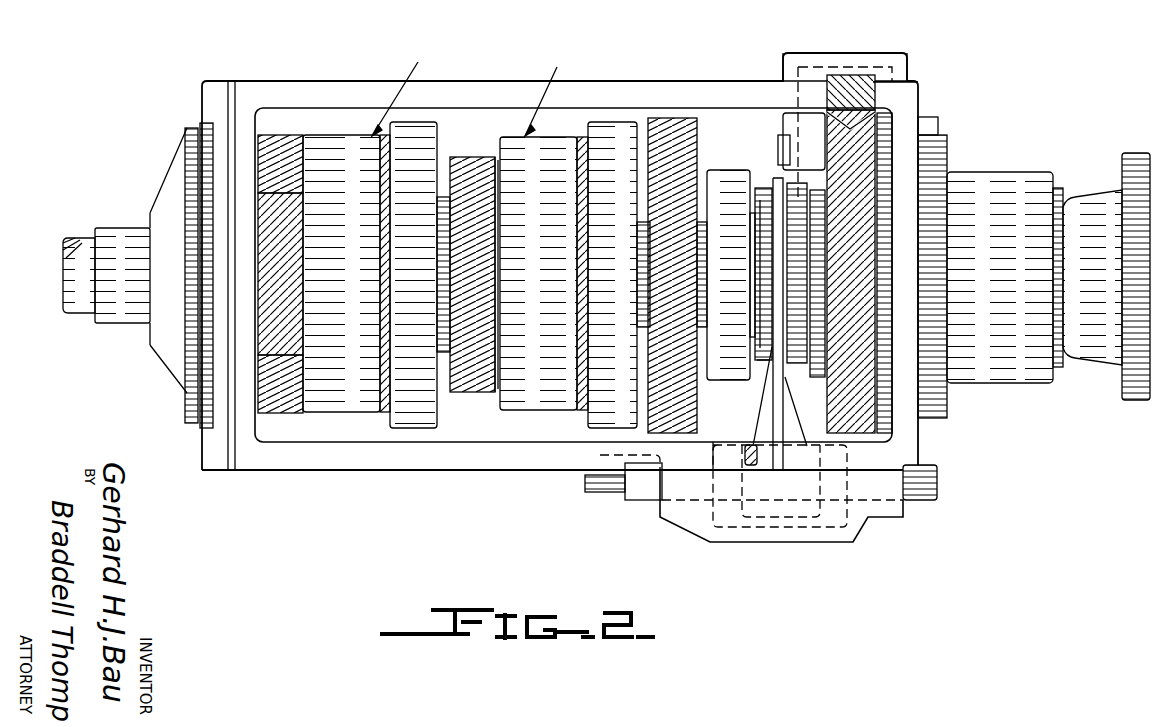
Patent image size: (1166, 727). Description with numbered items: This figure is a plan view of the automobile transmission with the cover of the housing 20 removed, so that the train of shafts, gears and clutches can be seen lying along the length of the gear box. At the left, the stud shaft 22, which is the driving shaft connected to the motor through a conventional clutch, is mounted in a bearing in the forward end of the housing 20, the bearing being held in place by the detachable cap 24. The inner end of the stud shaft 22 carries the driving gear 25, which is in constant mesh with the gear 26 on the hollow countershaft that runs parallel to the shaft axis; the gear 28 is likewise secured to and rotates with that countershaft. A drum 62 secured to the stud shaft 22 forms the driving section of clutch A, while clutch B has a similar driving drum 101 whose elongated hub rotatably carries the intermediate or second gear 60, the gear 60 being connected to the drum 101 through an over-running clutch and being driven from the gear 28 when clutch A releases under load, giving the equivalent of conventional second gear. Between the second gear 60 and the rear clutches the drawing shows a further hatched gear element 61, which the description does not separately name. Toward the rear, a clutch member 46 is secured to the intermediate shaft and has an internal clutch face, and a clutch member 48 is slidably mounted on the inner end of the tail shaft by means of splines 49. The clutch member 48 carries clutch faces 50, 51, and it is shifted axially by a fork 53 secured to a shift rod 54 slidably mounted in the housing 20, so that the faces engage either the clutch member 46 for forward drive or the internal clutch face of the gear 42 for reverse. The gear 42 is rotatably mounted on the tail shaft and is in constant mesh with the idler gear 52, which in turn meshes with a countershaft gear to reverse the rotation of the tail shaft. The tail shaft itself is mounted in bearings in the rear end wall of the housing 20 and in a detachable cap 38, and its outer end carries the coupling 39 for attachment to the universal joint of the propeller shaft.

The housing 20 is at (341, 88).
The stud shaft 22 is at (81, 240).
The detachable cap 24 is at (168, 190).
The driving gear 25 is at (303, 229).
The gear 26 is at (296, 136).
The gear 28 is at (467, 160).
The detachable cap 38 is at (972, 177).
The coupling 39 is at (1095, 197).
The gear 42 is at (877, 206).
The clutch member 46 is at (722, 172).
The clutch member 48 is at (776, 184).
The splines 49 is at (755, 229).
The clutch face 50 is at (763, 362).
The clutch face 51 is at (795, 364).
The idler gear 52 is at (850, 77).
The fork 53 is at (777, 407).
The shift rod 54 is at (920, 500).
The intermediate or second gear 60 is at (490, 234).
The gear 61 is at (697, 133).
The drum 62 is at (437, 136).
The drum 101 is at (548, 143).